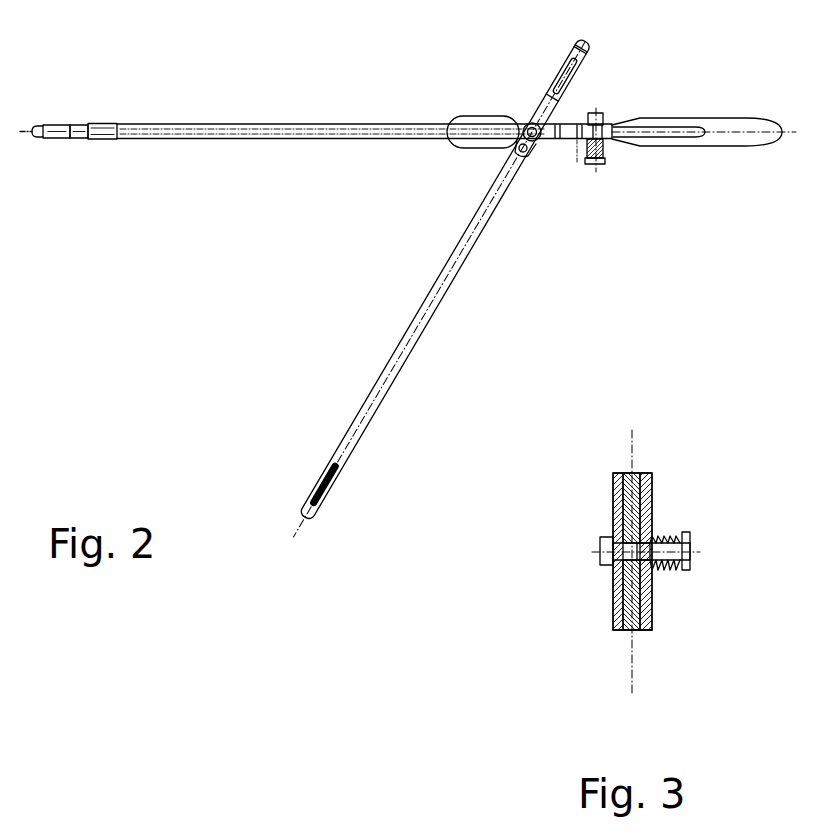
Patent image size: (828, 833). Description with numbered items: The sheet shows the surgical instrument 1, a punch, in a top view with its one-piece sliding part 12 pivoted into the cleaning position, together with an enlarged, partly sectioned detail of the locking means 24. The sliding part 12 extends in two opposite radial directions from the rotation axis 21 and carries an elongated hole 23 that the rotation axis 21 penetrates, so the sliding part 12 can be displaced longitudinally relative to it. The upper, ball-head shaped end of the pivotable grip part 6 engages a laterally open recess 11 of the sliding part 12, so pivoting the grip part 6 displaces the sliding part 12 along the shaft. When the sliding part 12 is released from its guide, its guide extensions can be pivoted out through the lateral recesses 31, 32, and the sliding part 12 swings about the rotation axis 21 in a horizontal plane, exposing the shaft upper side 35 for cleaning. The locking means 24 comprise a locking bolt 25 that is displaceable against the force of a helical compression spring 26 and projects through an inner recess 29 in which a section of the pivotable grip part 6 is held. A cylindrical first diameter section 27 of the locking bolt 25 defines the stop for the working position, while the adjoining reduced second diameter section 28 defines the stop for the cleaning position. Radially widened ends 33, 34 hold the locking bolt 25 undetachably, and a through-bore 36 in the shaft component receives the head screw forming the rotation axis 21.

In FIG. 2, the surgical instrument 1 is at (727, 70).
In FIG. 2, the shaft upper side 35 is at (200, 126).
In FIG. 2, the lateral recess 31 is at (103, 138).
In FIG. 2, the lateral recess 32 is at (526, 128).
In FIG. 2, the rotation axis 21 is at (531, 128).
In FIG. 2, the elongated hole 23 is at (531, 150).
In FIG. 2, the locking means 24 is at (597, 172).
In FIG. 3, the locking means 24 is at (716, 500).
In FIG. 2, the sliding part 12 is at (400, 365).
In FIG. 2, the laterally open recess 11 is at (588, 66).
In FIG. 3, the pivotable grip part 6 is at (635, 473).
In FIG. 3, the radially widened end 33 is at (607, 540).
In FIG. 3, the inner recess 29 is at (650, 618).
In FIG. 3, the locking bolt 25 is at (600, 557).
In FIG. 3, the first diameter section 27 is at (615, 567).
In FIG. 3, the through-bore 36 is at (613, 607).
In FIG. 3, the second diameter section 28 is at (652, 530).
In FIG. 3, the spring 26 is at (663, 572).
In FIG. 3, the radially widened end 34 is at (692, 548).